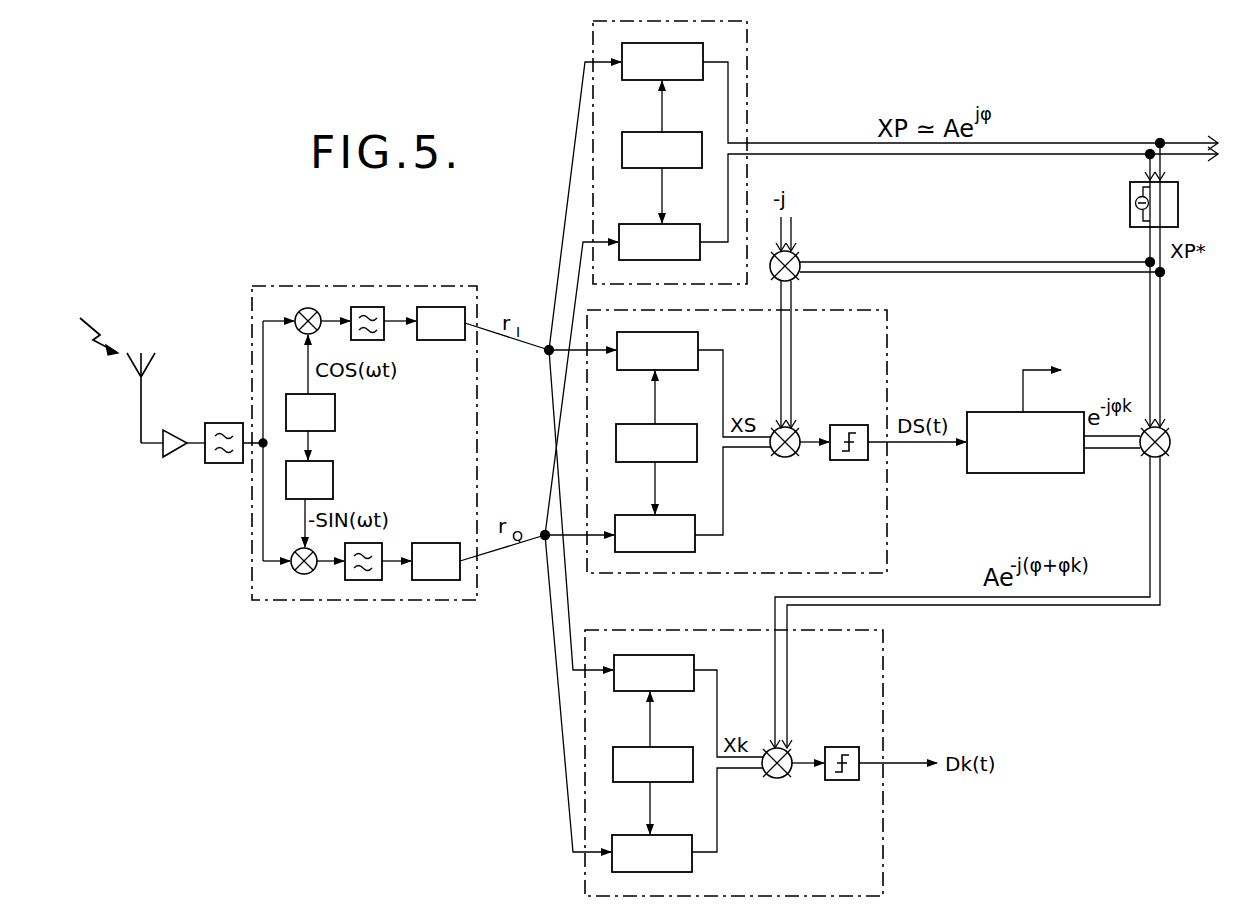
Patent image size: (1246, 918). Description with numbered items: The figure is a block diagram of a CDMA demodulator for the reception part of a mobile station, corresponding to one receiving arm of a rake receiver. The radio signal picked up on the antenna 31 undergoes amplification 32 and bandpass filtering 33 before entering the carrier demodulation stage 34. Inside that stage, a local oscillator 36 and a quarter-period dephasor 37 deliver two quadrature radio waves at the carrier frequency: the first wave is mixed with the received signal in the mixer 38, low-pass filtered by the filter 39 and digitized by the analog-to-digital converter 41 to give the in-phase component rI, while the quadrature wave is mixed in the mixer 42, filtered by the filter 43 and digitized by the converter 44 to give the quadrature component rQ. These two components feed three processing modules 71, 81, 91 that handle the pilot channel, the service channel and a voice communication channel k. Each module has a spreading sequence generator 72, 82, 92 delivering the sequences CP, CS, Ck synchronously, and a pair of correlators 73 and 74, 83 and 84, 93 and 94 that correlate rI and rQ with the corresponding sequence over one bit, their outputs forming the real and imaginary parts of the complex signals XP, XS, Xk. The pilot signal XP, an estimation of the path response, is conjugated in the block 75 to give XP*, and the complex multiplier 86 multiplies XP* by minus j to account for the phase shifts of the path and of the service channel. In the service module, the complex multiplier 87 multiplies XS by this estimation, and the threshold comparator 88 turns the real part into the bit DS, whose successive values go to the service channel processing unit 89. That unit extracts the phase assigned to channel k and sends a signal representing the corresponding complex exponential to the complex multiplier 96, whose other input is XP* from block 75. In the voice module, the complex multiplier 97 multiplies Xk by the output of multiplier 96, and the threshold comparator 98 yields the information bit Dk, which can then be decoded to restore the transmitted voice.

The antenna 31 is at (135, 385).
The amplification 32 is at (176, 430).
The bandpass filtering 33 is at (222, 465).
The carrier demodulation stage 34 is at (250, 325).
The local oscillator 36 is at (336, 414).
The π/2 dephasor 37 is at (334, 475).
The mixer 38 is at (303, 307).
The low-pass filter 39 is at (375, 305).
The analog-to-digital converter 41 is at (445, 342).
The mixer 42 is at (305, 575).
The low-pass filter 43 is at (373, 581).
The analog-to-digital converter 44 is at (440, 536).
The pilot channel processing module 71 is at (748, 50).
The spreading sequence generator 72 is at (700, 121).
The correlator 73 is at (623, 82).
The correlator 74 is at (640, 222).
The complex conjugate block 75 is at (1128, 200).
The service channel processing module 81 is at (889, 343).
The spreading sequence generator 82 is at (690, 412).
The correlator 83 is at (620, 372).
The correlator 84 is at (623, 503).
The complex multiplier 86 is at (798, 255).
The complex multiplier 87 is at (790, 457).
The threshold comparator 88 is at (846, 462).
The service channel processing unit 89 is at (990, 475).
The voice communication channel processing module 91 is at (884, 670).
The spreading sequence generator 92 is at (684, 745).
The correlator 93 is at (620, 693).
The correlator 94 is at (625, 835).
The complex multiplier 96 is at (1166, 453).
The complex multiplier 97 is at (782, 780).
The threshold comparator 98 is at (845, 781).